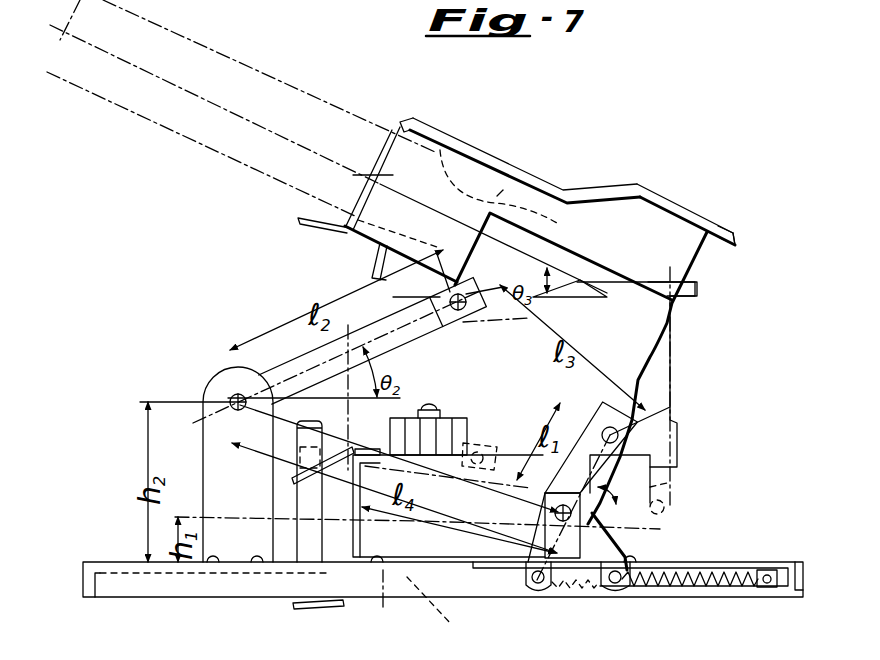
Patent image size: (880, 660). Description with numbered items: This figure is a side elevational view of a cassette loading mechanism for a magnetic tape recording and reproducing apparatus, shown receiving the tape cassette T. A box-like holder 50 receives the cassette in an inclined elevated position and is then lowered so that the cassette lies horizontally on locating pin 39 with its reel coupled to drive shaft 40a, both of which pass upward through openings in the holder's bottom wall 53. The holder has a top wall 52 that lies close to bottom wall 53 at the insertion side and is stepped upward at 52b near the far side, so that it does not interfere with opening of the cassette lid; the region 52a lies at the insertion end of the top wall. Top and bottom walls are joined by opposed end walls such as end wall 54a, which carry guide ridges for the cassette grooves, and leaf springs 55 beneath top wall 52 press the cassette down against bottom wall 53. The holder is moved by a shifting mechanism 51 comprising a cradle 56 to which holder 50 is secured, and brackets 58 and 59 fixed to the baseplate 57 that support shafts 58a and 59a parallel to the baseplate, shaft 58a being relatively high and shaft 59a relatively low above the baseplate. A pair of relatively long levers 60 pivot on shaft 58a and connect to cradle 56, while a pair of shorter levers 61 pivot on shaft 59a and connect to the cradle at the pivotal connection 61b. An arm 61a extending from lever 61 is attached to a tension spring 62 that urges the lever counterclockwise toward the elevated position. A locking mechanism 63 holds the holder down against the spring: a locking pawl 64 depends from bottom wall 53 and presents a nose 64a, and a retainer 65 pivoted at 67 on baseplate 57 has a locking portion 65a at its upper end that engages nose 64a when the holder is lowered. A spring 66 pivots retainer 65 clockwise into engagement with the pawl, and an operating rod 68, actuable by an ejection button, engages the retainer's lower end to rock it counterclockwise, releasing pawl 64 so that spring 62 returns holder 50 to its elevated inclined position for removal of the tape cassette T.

The tape cassette T is at (336, 102).
The locating pin 39 is at (374, 436).
The reel drive shaft 40a is at (501, 428).
The holder 50 is at (600, 190).
The shifting mechanism 51 is at (262, 340).
The top wall 52 is at (502, 138).
The top wall portion 52a is at (408, 124).
The upward step of top wall 52b is at (735, 236).
The bottom wall 53 is at (401, 243).
The end wall 54a is at (345, 207).
The leaf spring 55 is at (519, 200).
The cradle 56 is at (653, 322).
The baseplate 57 is at (217, 592).
The bracket 58 is at (232, 443).
The shaft 58a is at (230, 402).
The bracket 59 is at (530, 596).
The shaft 59a is at (553, 513).
The lever 60 is at (437, 345).
The lever 61 is at (724, 498).
The arm 61a is at (600, 592).
The pivotal connection 61b is at (680, 440).
The tension spring 62 is at (700, 598).
The locking mechanism 63 is at (458, 552).
The locking pawl 64 is at (372, 268).
The nose 64a is at (368, 252).
The retainer 65 is at (335, 540).
The locking portion 65a is at (389, 483).
The spring 66 is at (449, 614).
The pivot 67 is at (385, 610).
The operating rod 68 is at (335, 608).